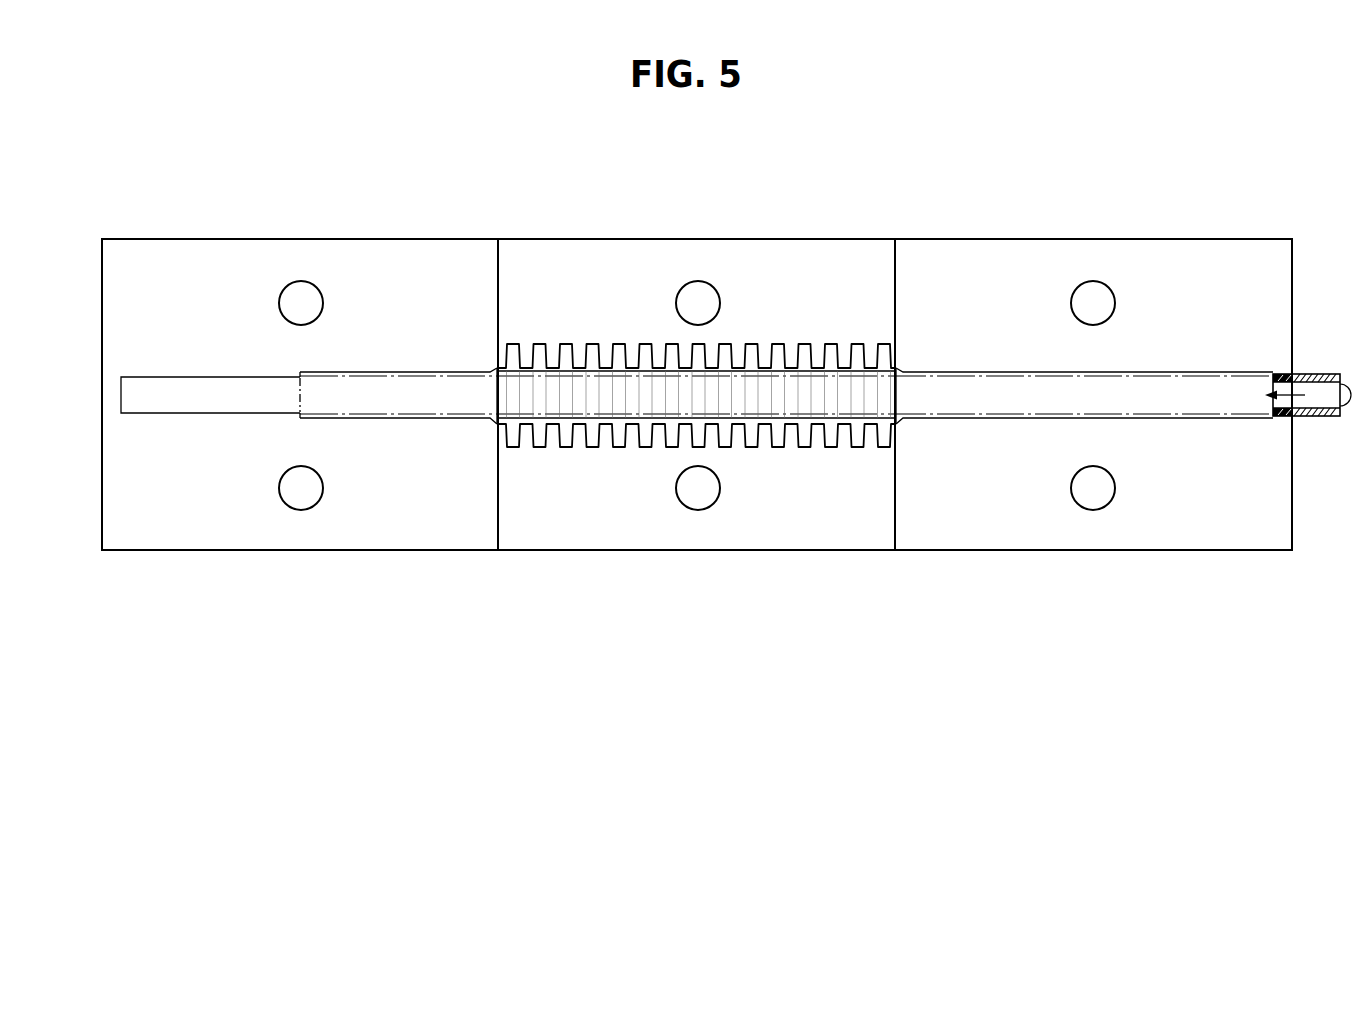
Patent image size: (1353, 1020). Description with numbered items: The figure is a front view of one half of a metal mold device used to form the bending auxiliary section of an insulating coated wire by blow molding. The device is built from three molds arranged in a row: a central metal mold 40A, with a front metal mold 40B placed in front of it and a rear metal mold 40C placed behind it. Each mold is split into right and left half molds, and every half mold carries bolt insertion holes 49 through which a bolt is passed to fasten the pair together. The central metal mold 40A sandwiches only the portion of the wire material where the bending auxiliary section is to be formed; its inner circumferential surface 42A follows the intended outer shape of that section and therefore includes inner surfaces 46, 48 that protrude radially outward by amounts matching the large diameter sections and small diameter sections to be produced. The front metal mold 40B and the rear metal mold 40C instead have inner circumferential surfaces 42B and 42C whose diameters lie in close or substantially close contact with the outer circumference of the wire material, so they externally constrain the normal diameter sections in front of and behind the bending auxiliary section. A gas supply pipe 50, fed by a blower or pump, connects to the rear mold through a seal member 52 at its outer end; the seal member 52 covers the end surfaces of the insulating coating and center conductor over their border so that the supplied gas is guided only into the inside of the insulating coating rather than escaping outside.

The central metal mold 40A is at (762, 236).
The front metal mold 40B is at (406, 236).
The rear metal mold 40C is at (1012, 236).
The inner circumferential surface 42A is at (696, 397).
The inner circumferential surface 42B is at (393, 400).
The inner circumferential surface 42C is at (1005, 398).
The inner surface 46 is at (573, 355).
The inner surface 48 is at (646, 425).
The bolt insertion hole 49 is at (301, 292).
The gas supply pipe 50 is at (1312, 417).
The seal member 52 is at (1281, 373).